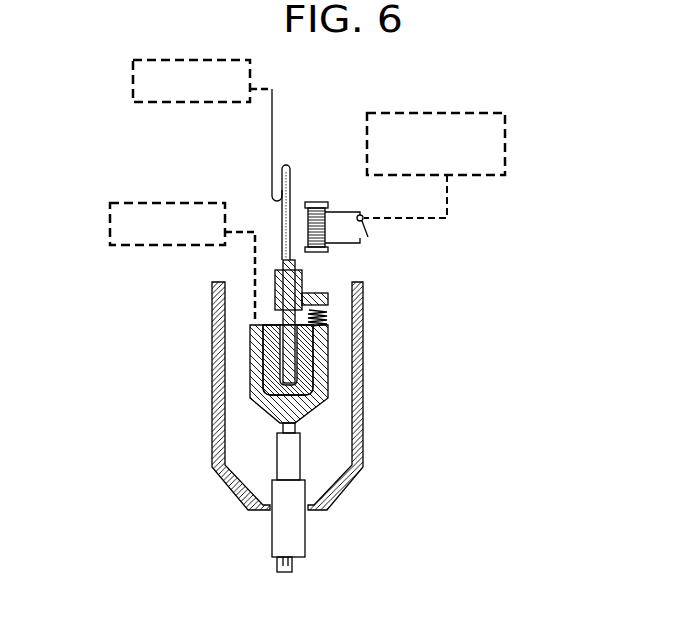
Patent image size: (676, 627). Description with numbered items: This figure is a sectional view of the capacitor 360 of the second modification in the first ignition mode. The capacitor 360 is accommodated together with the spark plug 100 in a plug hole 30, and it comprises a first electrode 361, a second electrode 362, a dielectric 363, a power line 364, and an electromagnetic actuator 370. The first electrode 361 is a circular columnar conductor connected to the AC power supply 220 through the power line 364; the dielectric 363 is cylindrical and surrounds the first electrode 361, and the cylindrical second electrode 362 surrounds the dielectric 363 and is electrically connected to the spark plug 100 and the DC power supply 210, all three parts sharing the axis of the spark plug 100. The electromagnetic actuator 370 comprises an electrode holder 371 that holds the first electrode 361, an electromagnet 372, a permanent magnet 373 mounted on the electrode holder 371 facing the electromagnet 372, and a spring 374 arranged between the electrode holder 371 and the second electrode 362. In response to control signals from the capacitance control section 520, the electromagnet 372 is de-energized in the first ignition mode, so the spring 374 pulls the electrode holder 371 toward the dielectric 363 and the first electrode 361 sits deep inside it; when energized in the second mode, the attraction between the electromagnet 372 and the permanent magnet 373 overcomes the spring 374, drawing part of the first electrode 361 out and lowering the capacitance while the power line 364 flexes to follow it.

The plug hole 30 is at (232, 445).
The spark plug 100 is at (316, 545).
The DC power supply 210 is at (110, 231).
The AC power supply 220 is at (133, 88).
The capacitor 360 is at (386, 294).
The first electrode 361 is at (281, 262).
The second electrode 362 is at (320, 388).
The dielectric 363 is at (305, 358).
The power line 364 is at (272, 143).
The electromagnetic actuator 370 is at (372, 210).
The electrode holder 371 is at (332, 294).
The electromagnet 372 is at (314, 201).
The permanent magnet 373 is at (330, 300).
The spring 374 is at (318, 318).
The capacitance control section 520 is at (506, 142).